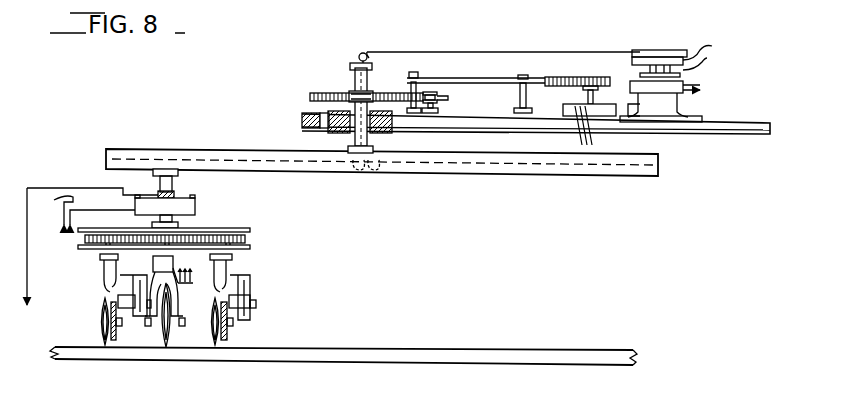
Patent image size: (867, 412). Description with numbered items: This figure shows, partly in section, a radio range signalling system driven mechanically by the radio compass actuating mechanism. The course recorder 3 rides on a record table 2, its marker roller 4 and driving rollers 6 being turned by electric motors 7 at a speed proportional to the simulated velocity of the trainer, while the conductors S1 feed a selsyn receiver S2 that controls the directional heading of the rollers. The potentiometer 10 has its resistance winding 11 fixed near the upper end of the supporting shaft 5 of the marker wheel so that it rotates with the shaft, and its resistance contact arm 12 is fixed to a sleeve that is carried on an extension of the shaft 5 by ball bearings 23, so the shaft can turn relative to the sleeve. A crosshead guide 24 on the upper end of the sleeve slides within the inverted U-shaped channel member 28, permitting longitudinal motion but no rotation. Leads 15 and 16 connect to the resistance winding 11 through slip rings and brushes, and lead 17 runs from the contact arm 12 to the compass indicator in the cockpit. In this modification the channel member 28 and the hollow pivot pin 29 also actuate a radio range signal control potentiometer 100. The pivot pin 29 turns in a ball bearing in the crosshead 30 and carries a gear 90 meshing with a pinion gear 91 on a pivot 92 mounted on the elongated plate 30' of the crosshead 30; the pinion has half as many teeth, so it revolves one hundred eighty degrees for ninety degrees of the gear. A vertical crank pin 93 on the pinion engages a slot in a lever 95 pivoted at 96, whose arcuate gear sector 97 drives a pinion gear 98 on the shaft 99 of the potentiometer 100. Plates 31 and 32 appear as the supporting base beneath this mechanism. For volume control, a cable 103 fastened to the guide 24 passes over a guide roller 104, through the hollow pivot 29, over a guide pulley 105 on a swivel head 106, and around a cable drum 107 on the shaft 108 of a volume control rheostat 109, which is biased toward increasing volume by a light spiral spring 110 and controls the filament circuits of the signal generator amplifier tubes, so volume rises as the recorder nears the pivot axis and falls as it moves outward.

The record table 2 is at (405, 352).
The course recorder 3 is at (250, 251).
The marker roller 4 is at (166, 347).
The supporting shaft 5 is at (178, 298).
The driving rollers 6 is at (105, 345).
The electric motors 7 is at (141, 313).
The potentiometer 10 is at (195, 209).
The resistance winding 11 is at (125, 190).
The resistance contact arm 12 is at (177, 193).
The lead 15 is at (51, 221).
The lead 16 is at (84, 211).
The lead 17 is at (28, 288).
The ball bearings 23 is at (153, 172).
The crosshead guide 24 is at (180, 173).
The inverted U-shaped channel member 28 is at (155, 149).
The pivot pin 29 is at (368, 147).
The crosshead 30 is at (354, 132).
The elongated plate 30' is at (498, 107).
The upper plate 31 is at (312, 128).
The lower plate 32 is at (302, 116).
The gear 90 is at (312, 93).
The pinion gear 91 is at (438, 110).
The pivot 92 is at (440, 96).
The vertical crank pin 93 is at (415, 74).
The lever 95 is at (469, 78).
The lever pivot 96 is at (524, 75).
The arcuate gear sector 97 is at (577, 71).
The pinion gear 98 is at (612, 72).
The shaft 99 is at (594, 100).
The radio range signal control potentiometer 100 is at (608, 112).
The cable 103 is at (280, 171).
The guide roller 104 is at (361, 170).
The guide pulley 105 is at (366, 54).
The swivel head 106 is at (352, 63).
The cable drum 107 is at (652, 50).
The shaft 108 is at (705, 47).
The volume control rheostat 109 is at (650, 100).
The light spiral spring 110 is at (691, 75).
The conductors S1 is at (192, 274).
The selsyn receiver S2 is at (178, 284).